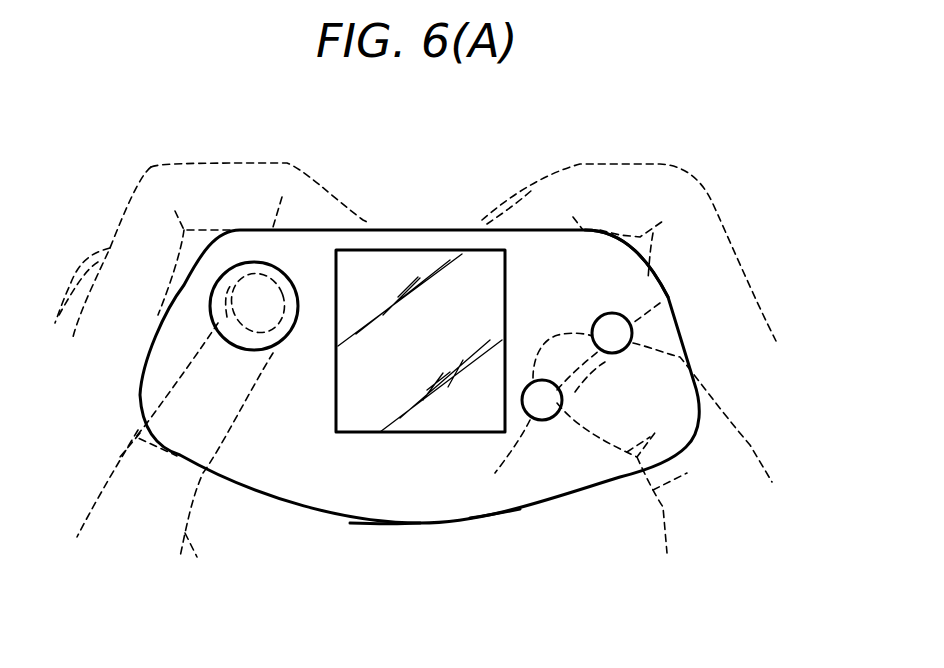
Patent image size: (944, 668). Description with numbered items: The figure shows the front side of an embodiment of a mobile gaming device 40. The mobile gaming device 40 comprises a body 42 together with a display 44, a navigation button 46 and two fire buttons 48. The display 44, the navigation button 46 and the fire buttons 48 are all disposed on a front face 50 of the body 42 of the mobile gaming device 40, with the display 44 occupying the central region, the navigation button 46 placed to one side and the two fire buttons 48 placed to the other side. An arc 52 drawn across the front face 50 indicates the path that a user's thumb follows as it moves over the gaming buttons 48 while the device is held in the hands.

The mobile gaming device 40 is at (463, 188).
The body 42 is at (605, 267).
The display 44 is at (417, 310).
The navigation button 46 is at (280, 345).
The fire buttons 48 is at (632, 332).
The front face 50 is at (395, 500).
The arc 52 is at (495, 480).